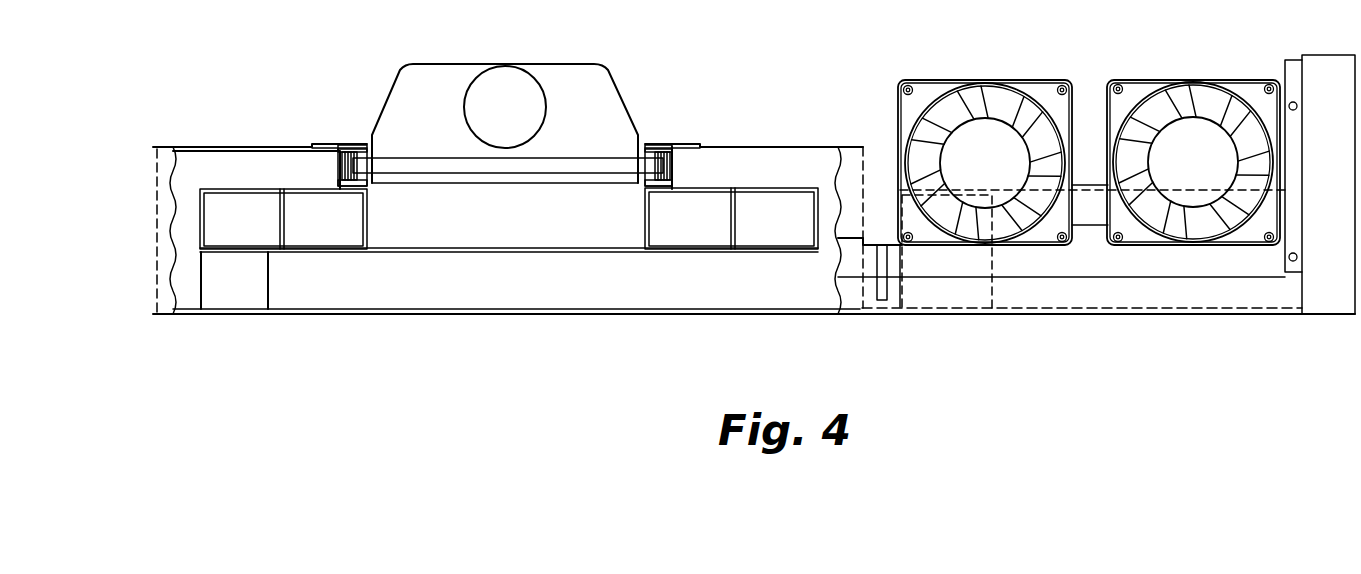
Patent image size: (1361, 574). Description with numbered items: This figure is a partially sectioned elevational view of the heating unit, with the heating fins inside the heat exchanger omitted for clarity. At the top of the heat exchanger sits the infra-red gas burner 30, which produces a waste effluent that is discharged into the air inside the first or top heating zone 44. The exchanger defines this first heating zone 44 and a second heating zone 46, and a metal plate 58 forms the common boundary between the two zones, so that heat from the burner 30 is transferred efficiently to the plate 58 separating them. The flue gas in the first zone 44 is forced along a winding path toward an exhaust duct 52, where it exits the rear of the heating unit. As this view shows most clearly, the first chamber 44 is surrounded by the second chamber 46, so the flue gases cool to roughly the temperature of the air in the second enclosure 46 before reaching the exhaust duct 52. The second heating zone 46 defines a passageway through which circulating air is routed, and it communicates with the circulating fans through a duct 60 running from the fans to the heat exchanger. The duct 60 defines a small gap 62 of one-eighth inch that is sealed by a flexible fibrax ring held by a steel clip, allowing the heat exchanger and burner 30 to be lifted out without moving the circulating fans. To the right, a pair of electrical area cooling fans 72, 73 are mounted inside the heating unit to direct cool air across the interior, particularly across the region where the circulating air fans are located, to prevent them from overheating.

The infra-red gas burner 30 is at (563, 85).
The first heating zone 44 is at (778, 236).
The second heating zone 46 is at (583, 297).
The exhaust duct 52 is at (270, 279).
The metal plate 58 is at (442, 252).
The duct 60 is at (892, 300).
The gap 62 is at (883, 238).
The electrical area cooling fan 72 is at (1183, 80).
The electrical area cooling fan 73 is at (985, 80).